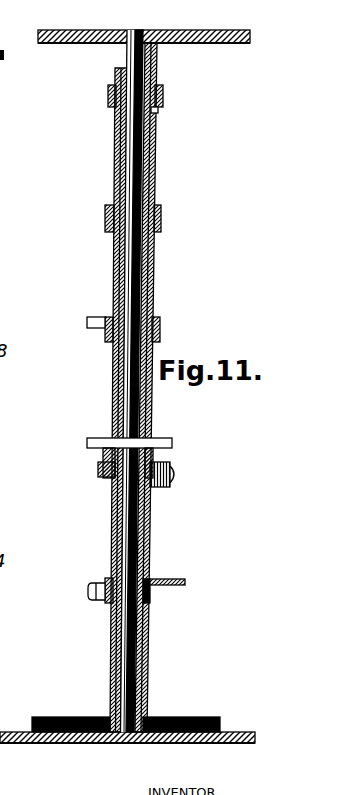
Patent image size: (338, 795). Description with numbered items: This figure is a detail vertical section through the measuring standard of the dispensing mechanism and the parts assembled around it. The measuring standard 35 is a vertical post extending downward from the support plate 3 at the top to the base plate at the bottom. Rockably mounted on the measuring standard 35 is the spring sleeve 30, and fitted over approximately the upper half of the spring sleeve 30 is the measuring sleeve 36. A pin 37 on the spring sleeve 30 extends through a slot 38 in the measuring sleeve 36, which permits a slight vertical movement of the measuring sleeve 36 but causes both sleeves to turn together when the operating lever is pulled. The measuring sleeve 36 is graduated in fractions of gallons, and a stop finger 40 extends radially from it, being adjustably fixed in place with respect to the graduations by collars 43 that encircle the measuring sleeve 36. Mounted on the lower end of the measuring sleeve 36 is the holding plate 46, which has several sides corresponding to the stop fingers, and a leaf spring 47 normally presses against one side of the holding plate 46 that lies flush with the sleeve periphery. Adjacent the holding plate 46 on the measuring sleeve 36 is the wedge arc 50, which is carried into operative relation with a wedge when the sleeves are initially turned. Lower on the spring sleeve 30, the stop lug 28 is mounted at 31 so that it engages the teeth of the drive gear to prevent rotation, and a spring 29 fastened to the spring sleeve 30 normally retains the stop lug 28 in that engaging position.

The support plate 3 is at (193, 31).
The stop lug 28 is at (172, 579).
The spring 29 is at (58, 717).
The spring sleeve 30 is at (141, 686).
The mounting of stop lug 31 is at (88, 591).
The measuring standard 35 is at (121, 648).
The measuring sleeve 36 is at (155, 264).
The pin 37 is at (160, 113).
The slot 38 is at (158, 136).
The stop finger 40 is at (87, 320).
The collar 43 is at (108, 95).
The holding plate 46 is at (100, 478).
The leaf spring 47 is at (171, 468).
The wedge arc 50 is at (160, 444).